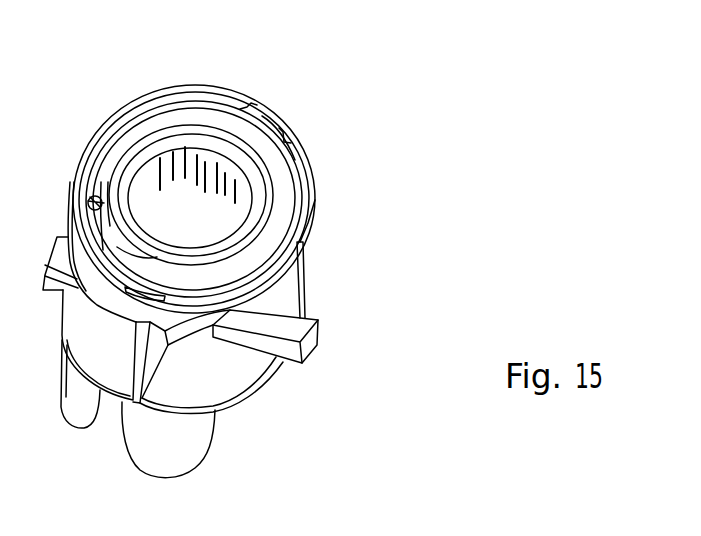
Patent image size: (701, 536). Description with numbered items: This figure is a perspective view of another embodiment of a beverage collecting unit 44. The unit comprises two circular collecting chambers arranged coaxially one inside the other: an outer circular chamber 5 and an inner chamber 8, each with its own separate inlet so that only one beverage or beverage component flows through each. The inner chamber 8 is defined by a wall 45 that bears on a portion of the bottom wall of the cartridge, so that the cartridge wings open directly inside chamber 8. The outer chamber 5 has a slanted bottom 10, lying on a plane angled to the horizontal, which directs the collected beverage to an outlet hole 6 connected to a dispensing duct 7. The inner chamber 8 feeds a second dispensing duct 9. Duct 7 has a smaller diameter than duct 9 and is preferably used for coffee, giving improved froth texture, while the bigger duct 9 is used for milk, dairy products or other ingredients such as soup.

The collecting unit 44 is at (330, 82).
The outer circular collecting chamber 5 is at (293, 193).
The outlet hole 6 is at (96, 148).
The dispensing duct 7 is at (86, 405).
The inner collecting chamber 8 is at (146, 178).
The dispensing duct 9 is at (189, 442).
The bottom 10 is at (274, 252).
The wall 45 is at (204, 141).